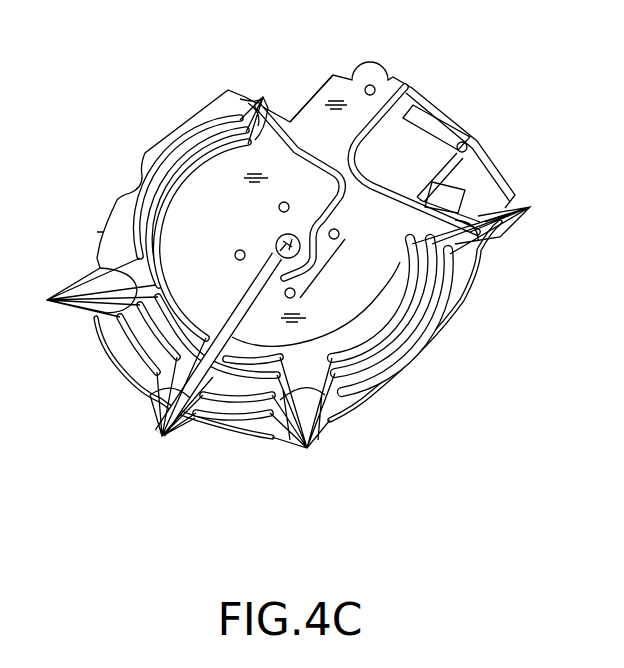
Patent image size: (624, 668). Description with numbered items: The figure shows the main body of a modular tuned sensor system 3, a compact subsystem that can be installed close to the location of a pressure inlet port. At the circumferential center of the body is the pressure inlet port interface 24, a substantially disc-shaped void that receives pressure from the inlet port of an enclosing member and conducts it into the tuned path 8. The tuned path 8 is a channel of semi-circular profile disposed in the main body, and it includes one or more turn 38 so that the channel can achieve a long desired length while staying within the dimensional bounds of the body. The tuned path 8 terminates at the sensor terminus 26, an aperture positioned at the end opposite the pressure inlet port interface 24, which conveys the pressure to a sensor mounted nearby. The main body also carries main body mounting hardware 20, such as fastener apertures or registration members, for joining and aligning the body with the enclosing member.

The modular tuned sensor system 3 is at (520, 72).
The sensor terminus 26 is at (407, 86).
The tuned path 8 is at (392, 182).
The pressure inlet port interface 24 is at (278, 238).
The main body mounting hardware 20 is at (322, 268).
The turn 38 is at (291, 275).